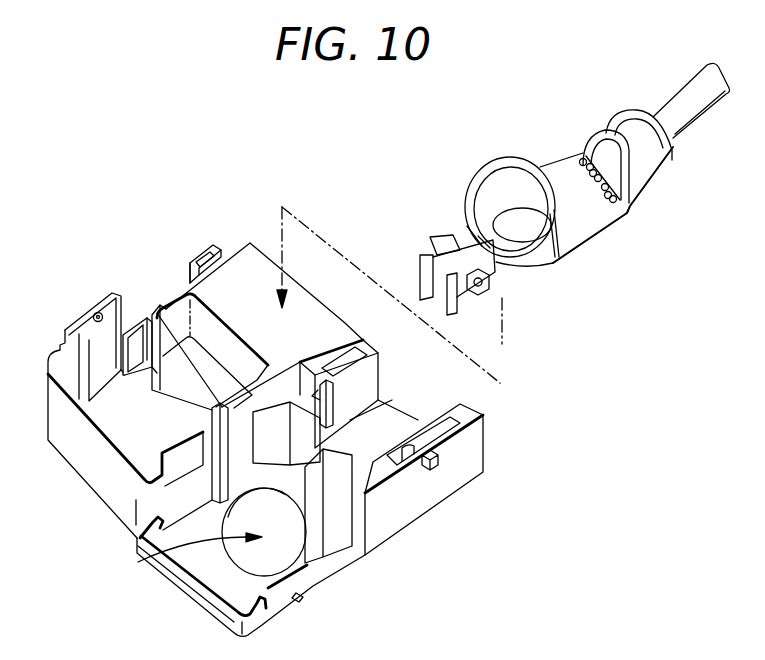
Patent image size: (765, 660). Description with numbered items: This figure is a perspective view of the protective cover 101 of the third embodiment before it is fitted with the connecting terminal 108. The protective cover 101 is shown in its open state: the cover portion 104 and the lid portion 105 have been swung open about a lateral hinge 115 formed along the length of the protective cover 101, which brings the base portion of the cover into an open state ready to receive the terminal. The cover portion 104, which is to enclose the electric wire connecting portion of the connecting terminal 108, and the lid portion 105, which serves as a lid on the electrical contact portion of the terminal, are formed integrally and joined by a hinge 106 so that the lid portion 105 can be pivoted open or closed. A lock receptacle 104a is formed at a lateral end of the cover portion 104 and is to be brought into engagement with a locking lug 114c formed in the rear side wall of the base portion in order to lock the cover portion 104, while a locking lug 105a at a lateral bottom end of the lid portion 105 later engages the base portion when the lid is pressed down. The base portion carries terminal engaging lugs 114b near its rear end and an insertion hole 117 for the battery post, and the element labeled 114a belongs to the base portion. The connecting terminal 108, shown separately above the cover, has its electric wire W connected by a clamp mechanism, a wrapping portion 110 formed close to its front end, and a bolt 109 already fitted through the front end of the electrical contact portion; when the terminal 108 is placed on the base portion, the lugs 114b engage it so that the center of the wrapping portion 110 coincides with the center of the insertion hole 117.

The protective cover 101 is at (230, 178).
The cover portion 104 is at (246, 270).
The lock receptacle 104a is at (200, 258).
The lid portion 105 is at (95, 485).
The locking lug 105a is at (97, 312).
The hinge 106 is at (174, 383).
The connecting terminal 108 is at (559, 145).
The bolt 109 is at (436, 247).
The wrapping portion 110 is at (532, 270).
The notch 114a is at (302, 598).
The terminal engaging lugs 114b is at (333, 428).
The locking lug 114c is at (435, 468).
The lateral hinge 115 is at (322, 350).
The insertion hole 117 is at (222, 535).
The electric wire W is at (678, 104).